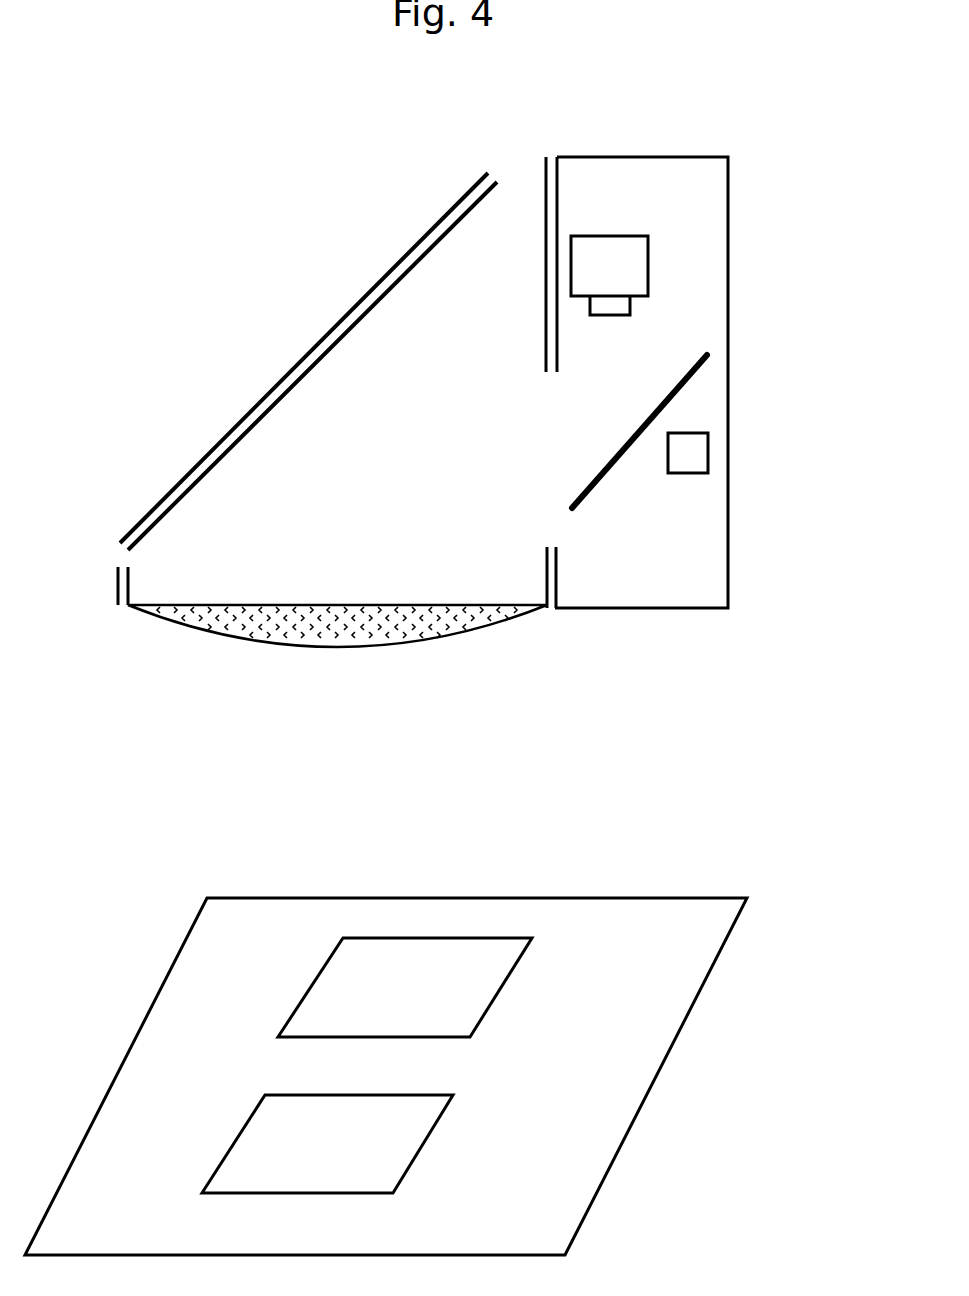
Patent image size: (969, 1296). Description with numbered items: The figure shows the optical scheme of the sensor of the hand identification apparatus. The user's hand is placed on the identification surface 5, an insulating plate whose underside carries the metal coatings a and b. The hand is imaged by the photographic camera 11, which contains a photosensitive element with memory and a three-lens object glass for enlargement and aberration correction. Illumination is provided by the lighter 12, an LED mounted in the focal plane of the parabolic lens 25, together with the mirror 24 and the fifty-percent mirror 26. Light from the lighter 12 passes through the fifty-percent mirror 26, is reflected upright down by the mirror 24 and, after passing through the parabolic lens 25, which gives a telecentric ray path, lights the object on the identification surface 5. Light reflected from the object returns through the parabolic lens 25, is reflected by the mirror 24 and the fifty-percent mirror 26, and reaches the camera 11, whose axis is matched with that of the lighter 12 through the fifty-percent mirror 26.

The identification surface 5 is at (588, 1030).
The photographic camera 11 is at (617, 260).
The lighter 12 is at (693, 452).
The mirror 24 is at (303, 357).
The parabolic lens 25 is at (497, 625).
The 50-percent mirror 26 is at (680, 392).